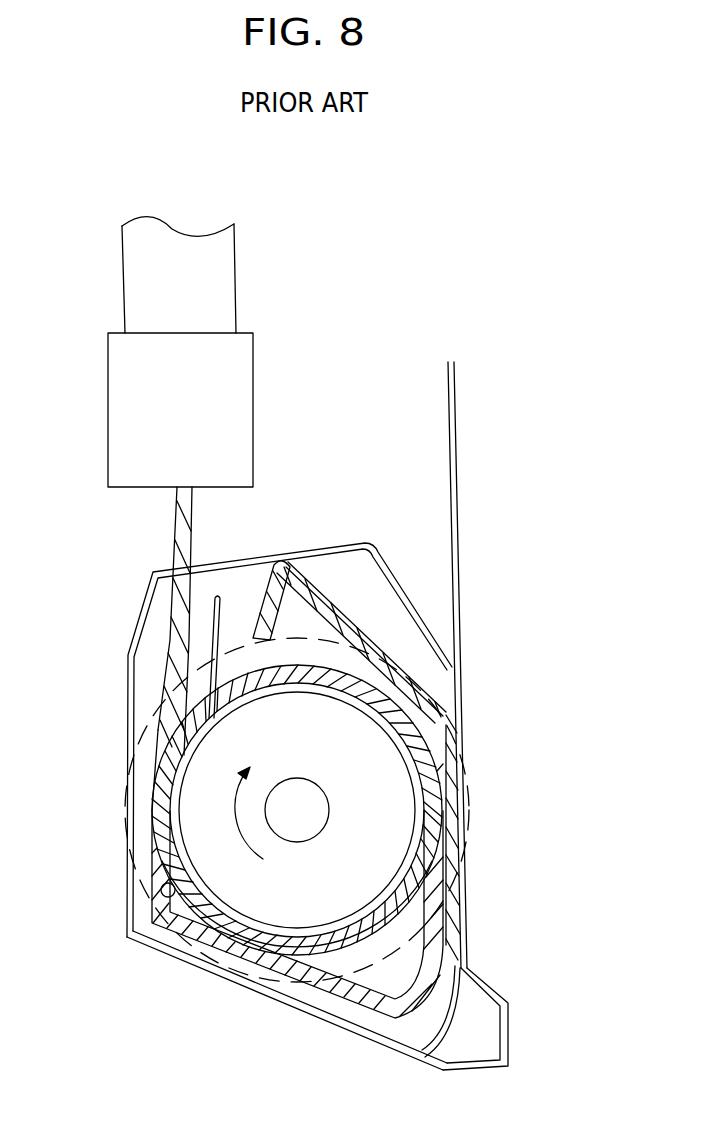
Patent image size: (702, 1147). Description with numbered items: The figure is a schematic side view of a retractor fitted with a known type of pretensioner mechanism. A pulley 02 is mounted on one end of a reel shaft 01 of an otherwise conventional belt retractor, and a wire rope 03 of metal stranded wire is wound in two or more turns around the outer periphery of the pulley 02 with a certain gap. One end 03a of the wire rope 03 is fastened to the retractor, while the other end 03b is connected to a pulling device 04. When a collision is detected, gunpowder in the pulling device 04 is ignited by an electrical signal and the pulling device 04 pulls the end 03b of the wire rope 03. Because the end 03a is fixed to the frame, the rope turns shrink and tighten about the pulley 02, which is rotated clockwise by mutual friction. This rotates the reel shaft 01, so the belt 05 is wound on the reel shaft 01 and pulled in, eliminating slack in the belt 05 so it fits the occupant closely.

The reel shaft 01 is at (328, 799).
The pulley 02 is at (390, 825).
The wire rope 03 is at (160, 835).
The one end of the wire rope 03a is at (272, 574).
The other end of the wire rope 03b is at (176, 519).
The pulling device 04 is at (262, 371).
The belt 05 is at (454, 513).